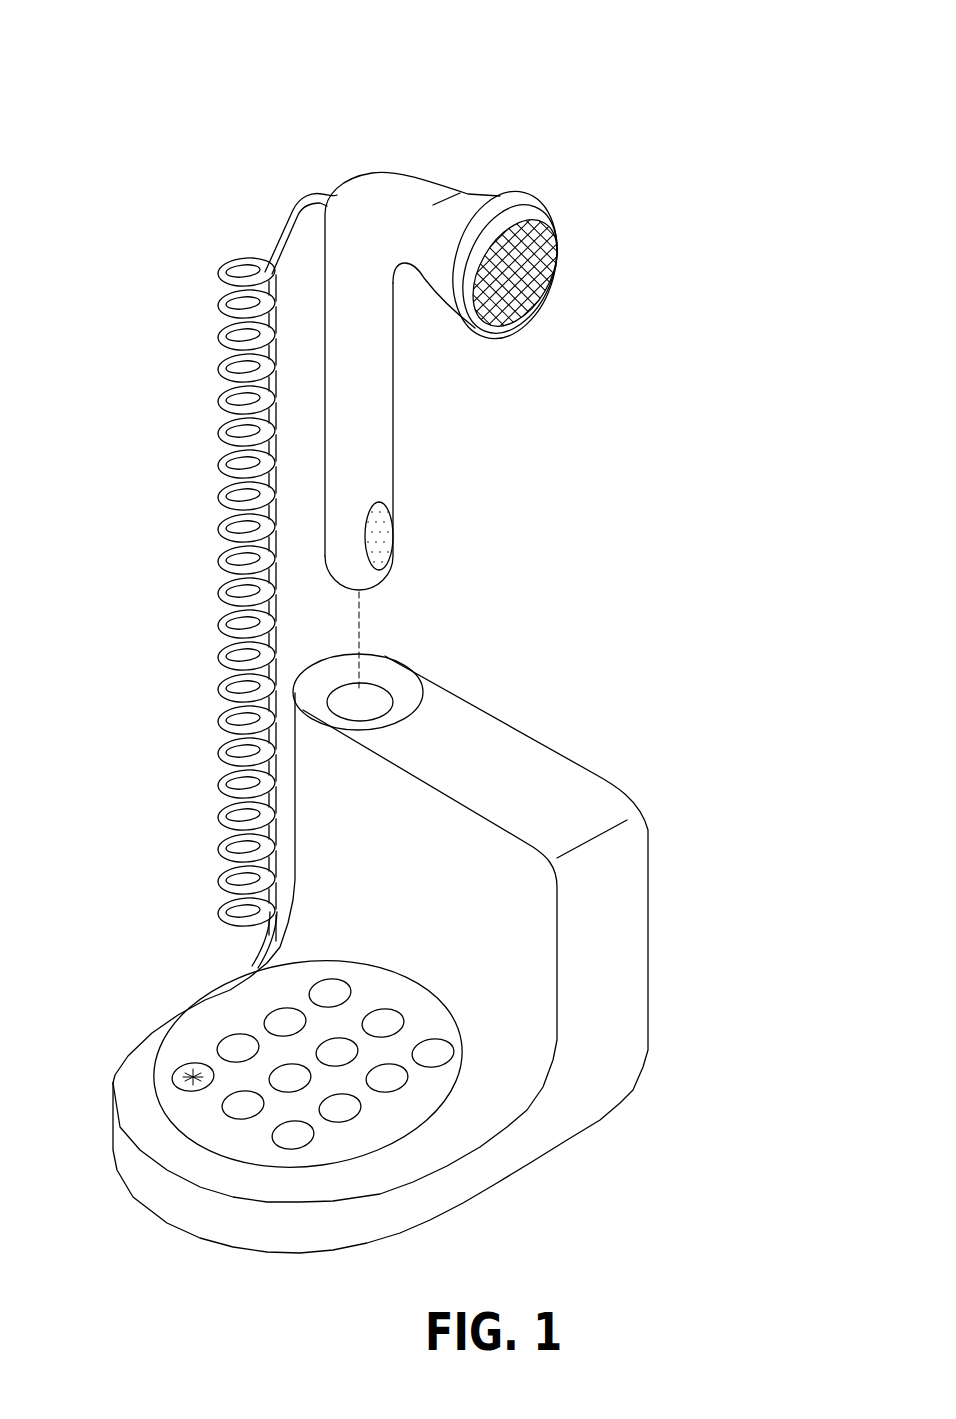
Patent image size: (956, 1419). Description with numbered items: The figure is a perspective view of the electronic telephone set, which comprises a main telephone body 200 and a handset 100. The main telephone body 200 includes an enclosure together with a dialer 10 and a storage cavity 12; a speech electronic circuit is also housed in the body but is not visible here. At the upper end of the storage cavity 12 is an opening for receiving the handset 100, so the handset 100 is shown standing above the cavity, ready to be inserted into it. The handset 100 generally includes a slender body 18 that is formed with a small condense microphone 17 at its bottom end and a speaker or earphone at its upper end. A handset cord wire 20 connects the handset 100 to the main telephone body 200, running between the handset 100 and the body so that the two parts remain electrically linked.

The handset 100 is at (471, 297).
The slender body 18 is at (362, 410).
The small condense microphone 17 is at (377, 542).
The handset cord wire 20 is at (220, 388).
The main telephone body 200 is at (451, 946).
The storage cavity 12 is at (367, 702).
The dialer 10 is at (231, 1039).